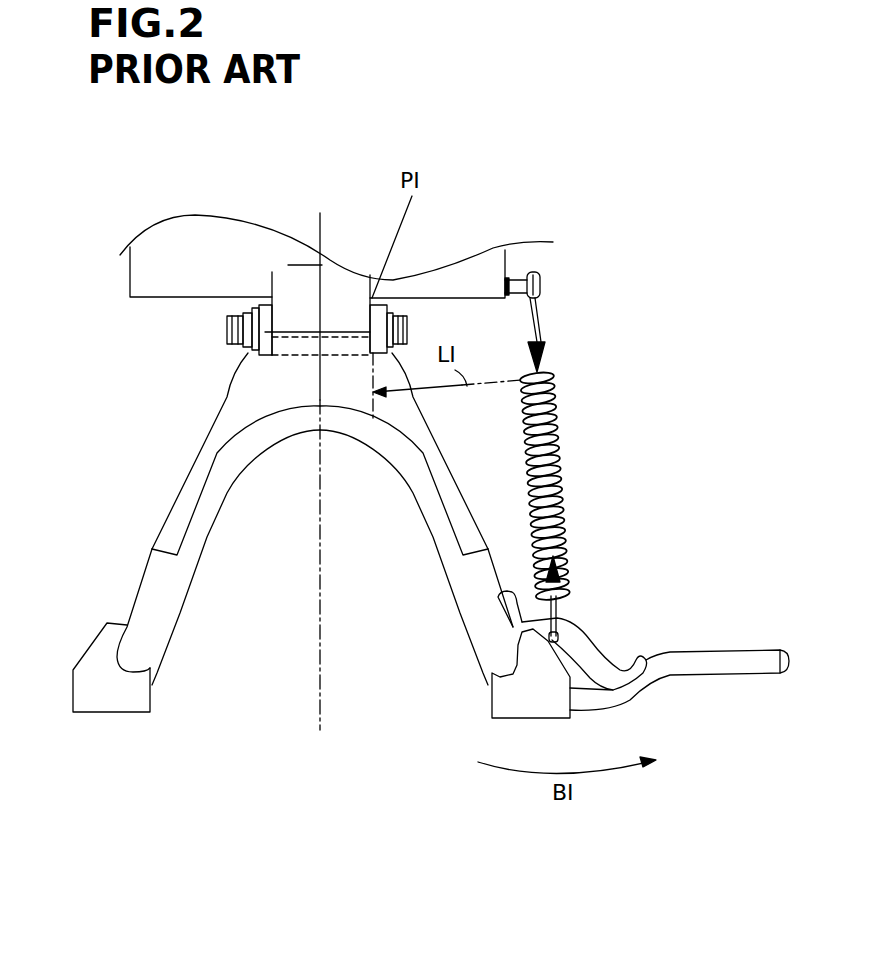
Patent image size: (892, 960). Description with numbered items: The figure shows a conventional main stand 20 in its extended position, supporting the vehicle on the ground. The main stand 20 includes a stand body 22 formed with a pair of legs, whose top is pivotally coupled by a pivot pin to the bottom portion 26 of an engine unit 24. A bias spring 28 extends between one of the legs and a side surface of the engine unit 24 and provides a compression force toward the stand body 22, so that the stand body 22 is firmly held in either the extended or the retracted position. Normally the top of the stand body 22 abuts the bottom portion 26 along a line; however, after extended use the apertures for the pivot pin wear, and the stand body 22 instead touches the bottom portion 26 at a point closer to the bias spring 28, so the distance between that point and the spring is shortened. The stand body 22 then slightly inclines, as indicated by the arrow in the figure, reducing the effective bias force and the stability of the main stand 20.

The main stand 20 is at (412, 535).
The stand body 22 is at (170, 512).
The engine unit 24 is at (180, 240).
The bottom portion 26 is at (350, 285).
The bias spring 28 is at (566, 440).